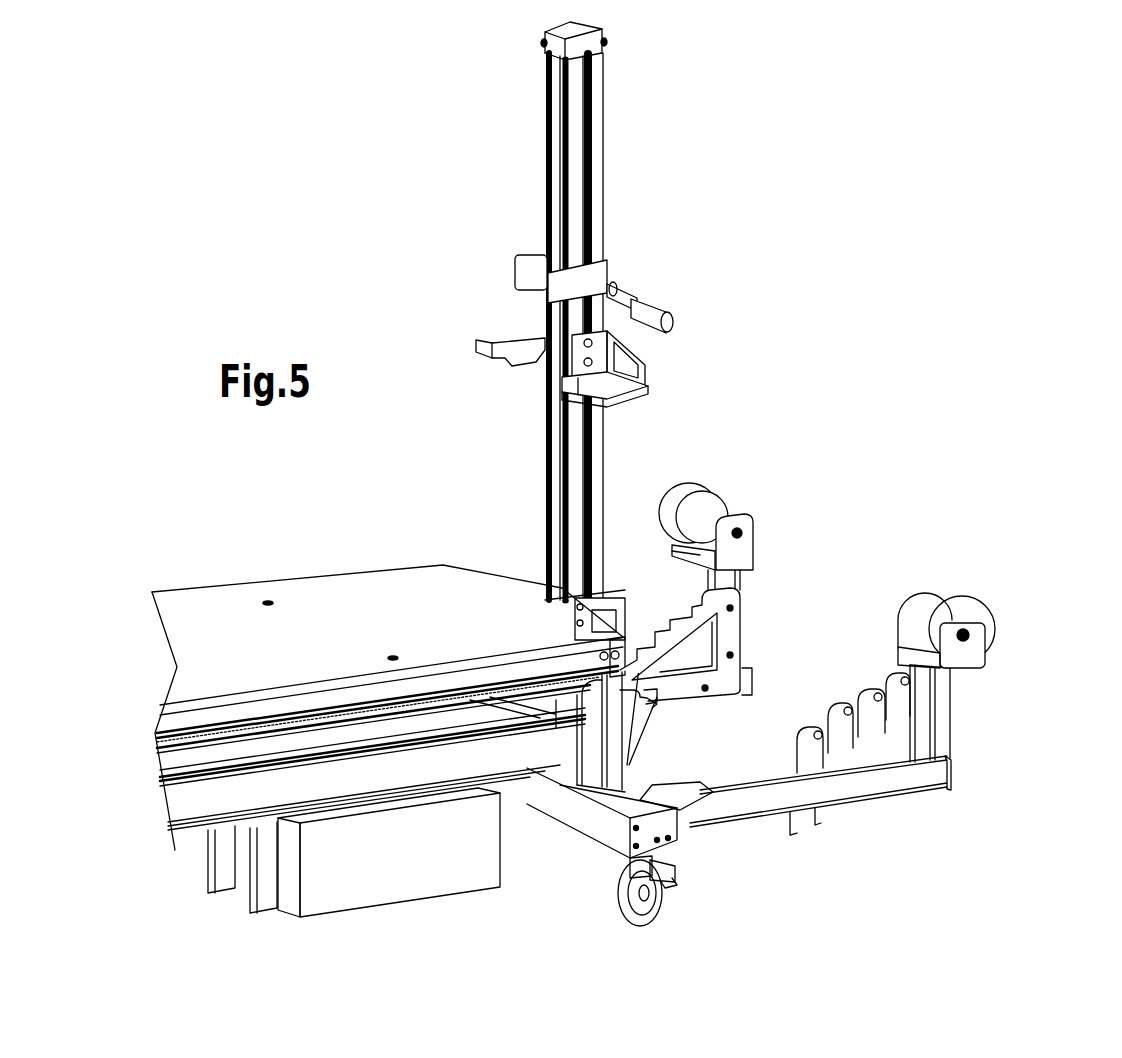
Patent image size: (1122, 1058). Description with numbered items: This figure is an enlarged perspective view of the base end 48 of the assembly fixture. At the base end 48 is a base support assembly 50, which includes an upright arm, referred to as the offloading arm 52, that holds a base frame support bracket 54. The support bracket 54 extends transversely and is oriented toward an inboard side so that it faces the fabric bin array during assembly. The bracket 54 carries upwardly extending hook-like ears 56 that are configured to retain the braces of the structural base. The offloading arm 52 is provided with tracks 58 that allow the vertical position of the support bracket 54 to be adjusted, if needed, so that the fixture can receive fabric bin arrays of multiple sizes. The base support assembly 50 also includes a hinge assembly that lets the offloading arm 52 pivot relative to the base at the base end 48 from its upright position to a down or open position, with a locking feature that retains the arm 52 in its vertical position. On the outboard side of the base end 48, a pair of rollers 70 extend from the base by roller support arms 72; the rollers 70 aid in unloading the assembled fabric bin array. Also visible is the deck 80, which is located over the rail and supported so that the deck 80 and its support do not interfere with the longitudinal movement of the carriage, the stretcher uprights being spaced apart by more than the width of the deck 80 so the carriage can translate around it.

The base end 48 is at (840, 181).
The base support assembly 50 is at (587, 820).
The offloading arm 52 is at (605, 80).
The base frame support bracket 54 is at (628, 398).
The hook-like ears 56 is at (512, 345).
The tracks 58 is at (592, 126).
The rollers 70 is at (714, 505).
The roller support arms 72 is at (750, 695).
The deck 80 is at (336, 617).